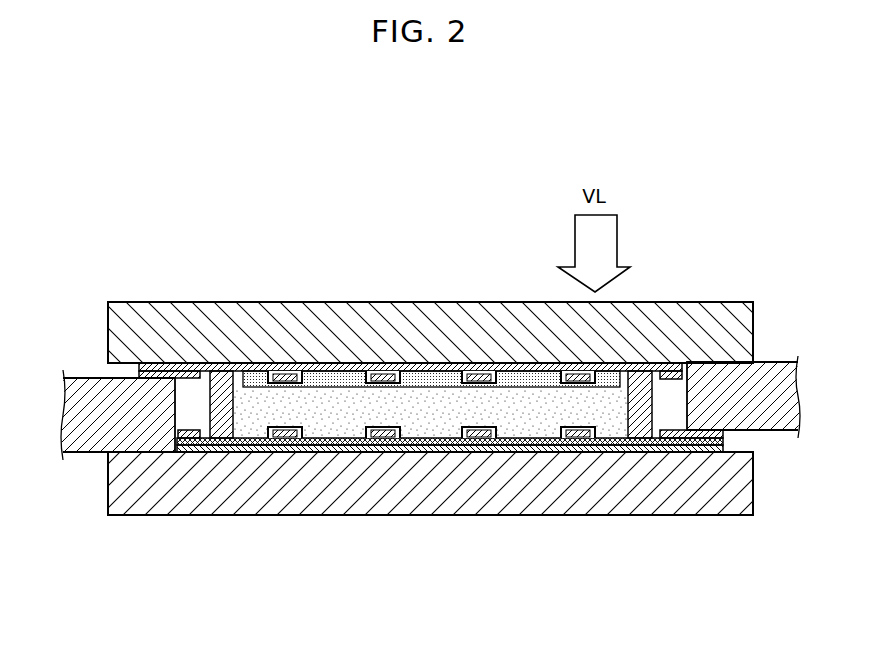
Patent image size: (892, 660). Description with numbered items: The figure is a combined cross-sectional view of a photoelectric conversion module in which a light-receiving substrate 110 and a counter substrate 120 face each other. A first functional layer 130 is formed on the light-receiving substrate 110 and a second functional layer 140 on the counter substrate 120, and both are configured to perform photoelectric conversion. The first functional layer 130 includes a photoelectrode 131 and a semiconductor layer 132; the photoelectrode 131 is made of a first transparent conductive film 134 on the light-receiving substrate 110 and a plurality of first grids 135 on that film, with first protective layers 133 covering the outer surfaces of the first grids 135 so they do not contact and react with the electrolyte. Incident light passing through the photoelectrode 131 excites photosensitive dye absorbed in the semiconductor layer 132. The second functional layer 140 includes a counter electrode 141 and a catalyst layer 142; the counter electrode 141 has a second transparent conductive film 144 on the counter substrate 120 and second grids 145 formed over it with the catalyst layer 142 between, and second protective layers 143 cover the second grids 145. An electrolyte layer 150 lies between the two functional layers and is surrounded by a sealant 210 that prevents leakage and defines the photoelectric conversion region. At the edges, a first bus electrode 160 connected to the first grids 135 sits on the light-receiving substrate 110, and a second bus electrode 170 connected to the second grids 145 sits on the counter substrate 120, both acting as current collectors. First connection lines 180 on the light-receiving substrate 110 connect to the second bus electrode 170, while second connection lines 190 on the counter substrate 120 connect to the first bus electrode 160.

The light-receiving substrate 110 is at (710, 308).
The counter substrate 120 is at (711, 497).
The first functional layer 130 is at (410, 275).
The photoelectrode 131 is at (411, 295).
The semiconductor layer 132 is at (447, 368).
The first protective layers 133 is at (402, 374).
The first transparent conductive film 134 is at (258, 366).
The first grids 135 is at (293, 370).
The second functional layer 140 is at (450, 533).
The counter electrode 141 is at (408, 514).
The catalyst layer 142 is at (356, 448).
The second protective layers 143 is at (399, 442).
The second transparent conductive film 144 is at (262, 440).
The second grids 145 is at (289, 435).
The electrolyte layer 150 is at (522, 413).
The first bus electrode 160 is at (138, 375).
The second bus electrode 170 is at (725, 432).
The first connection lines 180 is at (775, 362).
The second connection lines 190 is at (87, 447).
The sealant 210 is at (636, 432).